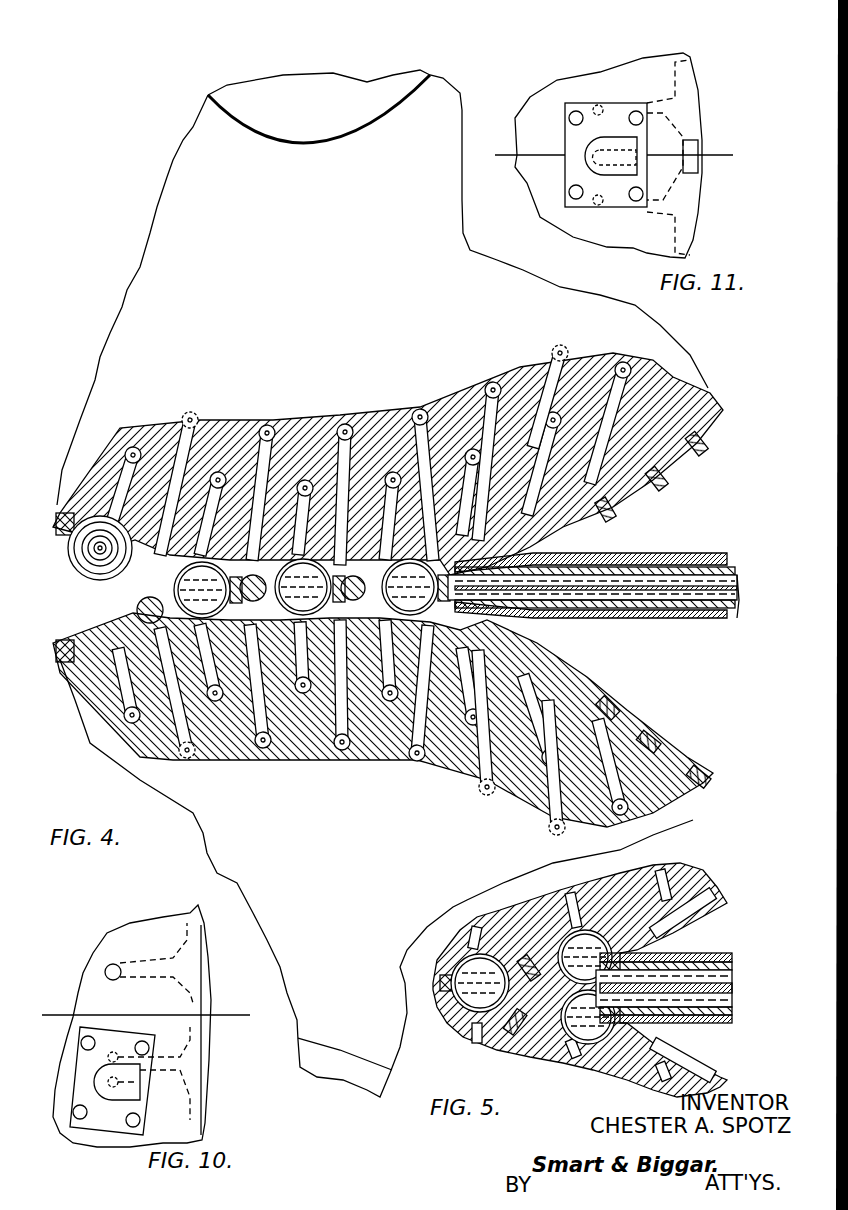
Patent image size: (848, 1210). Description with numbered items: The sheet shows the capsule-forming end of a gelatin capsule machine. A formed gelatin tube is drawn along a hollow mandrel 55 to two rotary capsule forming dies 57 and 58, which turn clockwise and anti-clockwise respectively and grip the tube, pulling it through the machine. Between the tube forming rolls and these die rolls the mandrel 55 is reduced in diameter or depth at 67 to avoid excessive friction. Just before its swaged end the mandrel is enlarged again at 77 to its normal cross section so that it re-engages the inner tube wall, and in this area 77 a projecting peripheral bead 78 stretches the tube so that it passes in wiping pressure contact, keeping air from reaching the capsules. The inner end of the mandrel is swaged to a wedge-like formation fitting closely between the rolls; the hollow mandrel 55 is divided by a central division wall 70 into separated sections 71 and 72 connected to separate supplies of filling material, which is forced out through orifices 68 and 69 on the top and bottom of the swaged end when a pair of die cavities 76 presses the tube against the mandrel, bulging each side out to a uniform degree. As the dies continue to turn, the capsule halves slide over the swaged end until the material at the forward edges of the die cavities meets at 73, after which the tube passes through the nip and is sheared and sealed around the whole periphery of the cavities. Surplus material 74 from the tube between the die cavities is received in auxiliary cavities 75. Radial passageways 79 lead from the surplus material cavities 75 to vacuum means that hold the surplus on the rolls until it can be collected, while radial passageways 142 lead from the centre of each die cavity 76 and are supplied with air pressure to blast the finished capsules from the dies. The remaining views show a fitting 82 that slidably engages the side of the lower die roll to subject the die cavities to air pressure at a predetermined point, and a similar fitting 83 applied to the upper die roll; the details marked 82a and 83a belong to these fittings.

In FIG. 4, the rotary capsule forming die 57 is at (150, 297).
In FIG. 4, the rotary capsule forming die 58 is at (230, 858).
In FIG. 4, the radial passageways 79 is at (323, 453).
In FIG. 4, the radial passageways 142 is at (428, 420).
In FIG. 4, the surplus material 74 is at (398, 560).
In FIG. 4, the die cavities 76 is at (110, 635).
In FIG. 5, the die cavities 76 is at (607, 950).
In FIG. 4, the auxiliary cavities 75 is at (645, 486).
In FIG. 4, the meeting portions 73 is at (345, 757).
In FIG. 4, the enlarged area of mandrel 77 is at (600, 555).
In FIG. 4, the reduced portion of mandrel 67 is at (685, 568).
In FIG. 5, the reduced portion of mandrel 67 is at (718, 963).
In FIG. 4, the central division wall 70 is at (737, 585).
In FIG. 5, the central division wall 70 is at (740, 990).
In FIG. 4, the peripheral bead 78 is at (560, 612).
In FIG. 4, the hollow mandrel 55 is at (740, 605).
In FIG. 5, the orifice 68 is at (617, 1040).
In FIG. 5, the orifice 69 is at (660, 960).
In FIG. 5, the mandrel section 71 is at (730, 980).
In FIG. 5, the mandrel section 72 is at (732, 1015).
In FIG. 11, the plate casting 83 is at (642, 77).
In FIG. 11, the keyhole slot 83a is at (610, 153).
In FIG. 10, the plate casting 82 is at (80, 1090).
In FIG. 10, the keyhole slot 82a is at (123, 1087).